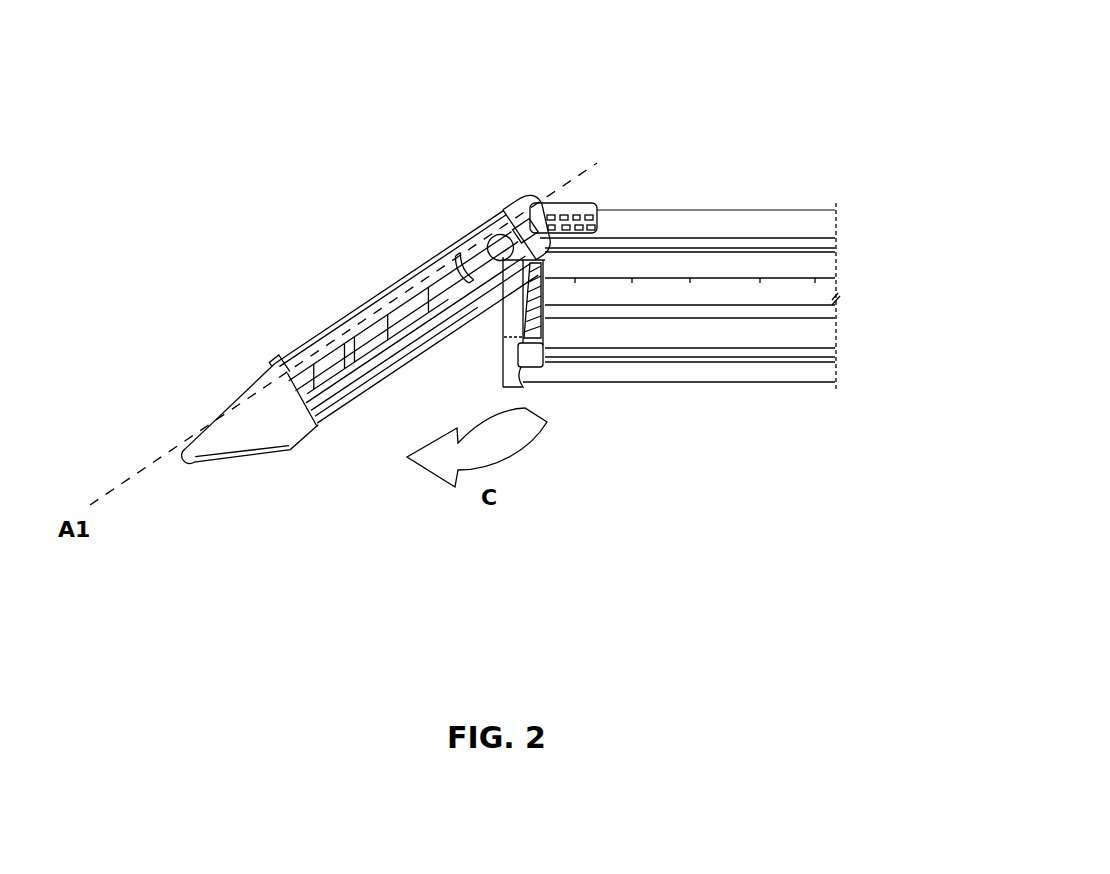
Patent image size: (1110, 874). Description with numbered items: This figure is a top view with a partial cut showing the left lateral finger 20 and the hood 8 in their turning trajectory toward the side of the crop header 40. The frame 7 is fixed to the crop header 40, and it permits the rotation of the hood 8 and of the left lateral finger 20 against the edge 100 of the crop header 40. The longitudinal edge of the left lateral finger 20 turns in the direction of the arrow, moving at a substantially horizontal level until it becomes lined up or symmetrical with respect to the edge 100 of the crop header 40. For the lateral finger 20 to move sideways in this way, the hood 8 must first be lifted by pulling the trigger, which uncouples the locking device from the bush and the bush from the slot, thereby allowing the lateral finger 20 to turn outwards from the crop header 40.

The left lateral finger 20 is at (212, 366).
The hood 8 is at (494, 211).
The frame 7 is at (562, 190).
The crop header 40 is at (720, 173).
The edge of the crop header 100 is at (552, 326).